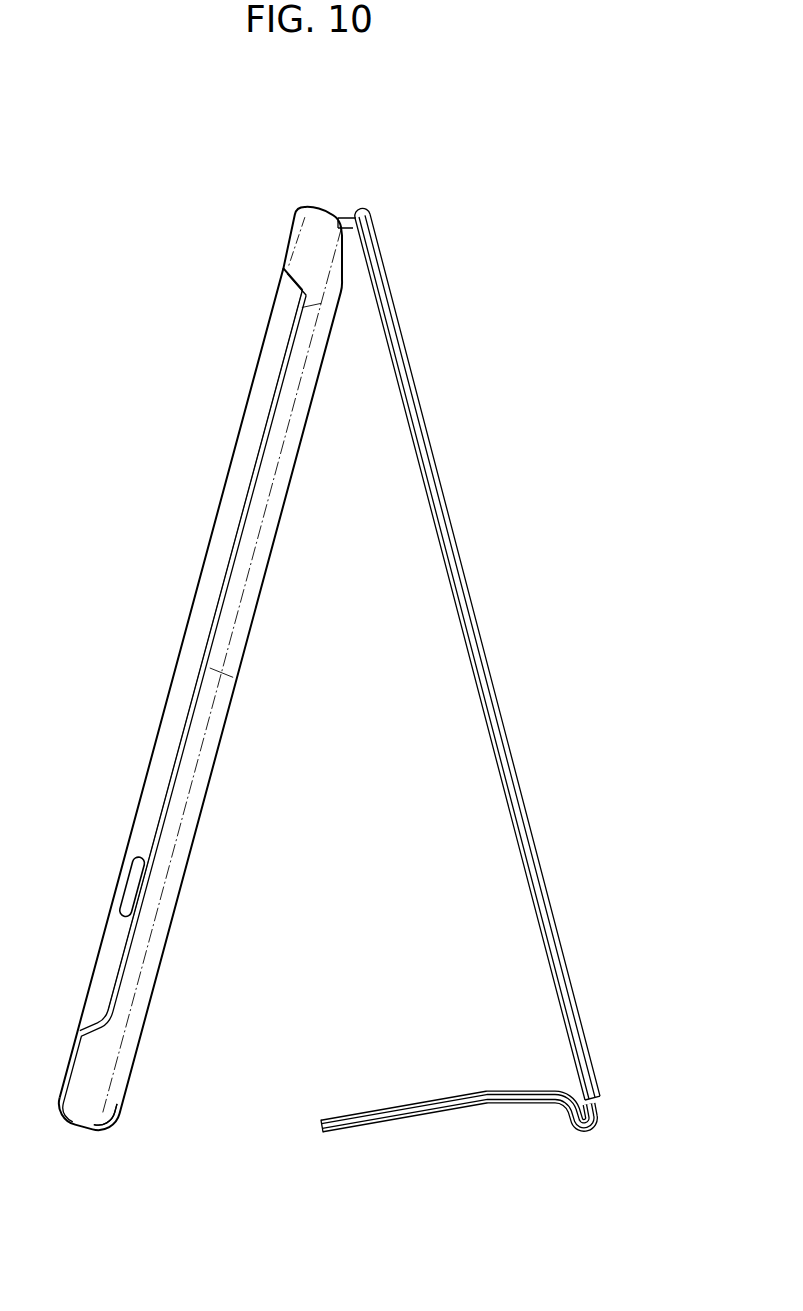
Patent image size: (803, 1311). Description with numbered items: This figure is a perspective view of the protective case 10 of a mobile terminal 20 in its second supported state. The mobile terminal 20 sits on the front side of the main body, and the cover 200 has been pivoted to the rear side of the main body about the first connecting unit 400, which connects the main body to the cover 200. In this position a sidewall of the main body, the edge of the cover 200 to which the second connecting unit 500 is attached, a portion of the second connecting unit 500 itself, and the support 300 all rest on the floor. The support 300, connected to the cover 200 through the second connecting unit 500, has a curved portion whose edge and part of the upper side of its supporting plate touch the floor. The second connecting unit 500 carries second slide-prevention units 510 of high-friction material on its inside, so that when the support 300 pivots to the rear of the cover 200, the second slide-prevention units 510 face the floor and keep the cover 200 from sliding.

The protective case 10 is at (479, 654).
The mobile terminal 20 is at (206, 669).
The cover 200 is at (508, 745).
The support 300 is at (500, 1111).
The first connecting unit 400 is at (344, 216).
The second connecting unit 500 is at (500, 1111).
The second slide-prevention units 510 is at (583, 1105).